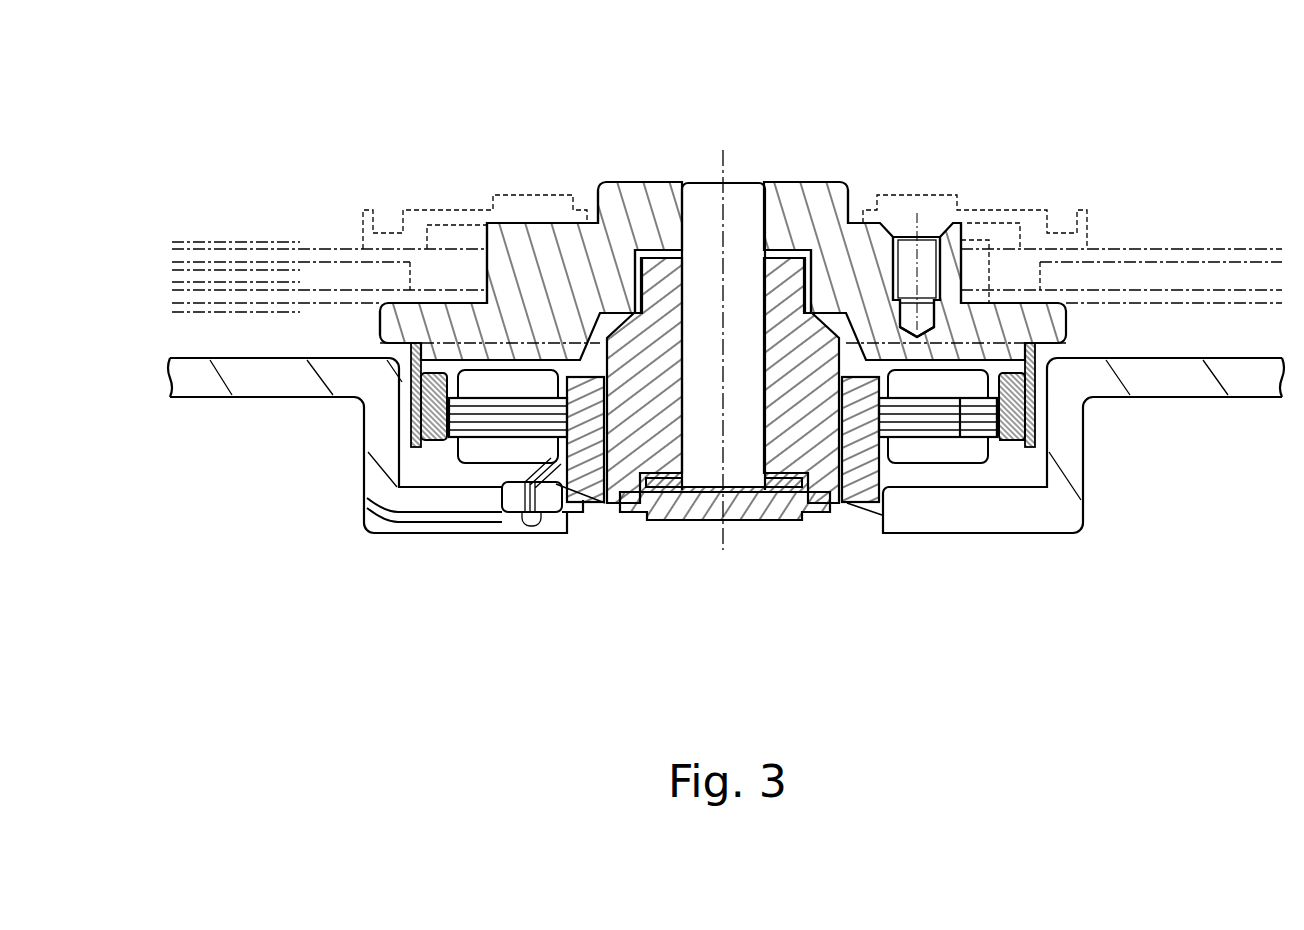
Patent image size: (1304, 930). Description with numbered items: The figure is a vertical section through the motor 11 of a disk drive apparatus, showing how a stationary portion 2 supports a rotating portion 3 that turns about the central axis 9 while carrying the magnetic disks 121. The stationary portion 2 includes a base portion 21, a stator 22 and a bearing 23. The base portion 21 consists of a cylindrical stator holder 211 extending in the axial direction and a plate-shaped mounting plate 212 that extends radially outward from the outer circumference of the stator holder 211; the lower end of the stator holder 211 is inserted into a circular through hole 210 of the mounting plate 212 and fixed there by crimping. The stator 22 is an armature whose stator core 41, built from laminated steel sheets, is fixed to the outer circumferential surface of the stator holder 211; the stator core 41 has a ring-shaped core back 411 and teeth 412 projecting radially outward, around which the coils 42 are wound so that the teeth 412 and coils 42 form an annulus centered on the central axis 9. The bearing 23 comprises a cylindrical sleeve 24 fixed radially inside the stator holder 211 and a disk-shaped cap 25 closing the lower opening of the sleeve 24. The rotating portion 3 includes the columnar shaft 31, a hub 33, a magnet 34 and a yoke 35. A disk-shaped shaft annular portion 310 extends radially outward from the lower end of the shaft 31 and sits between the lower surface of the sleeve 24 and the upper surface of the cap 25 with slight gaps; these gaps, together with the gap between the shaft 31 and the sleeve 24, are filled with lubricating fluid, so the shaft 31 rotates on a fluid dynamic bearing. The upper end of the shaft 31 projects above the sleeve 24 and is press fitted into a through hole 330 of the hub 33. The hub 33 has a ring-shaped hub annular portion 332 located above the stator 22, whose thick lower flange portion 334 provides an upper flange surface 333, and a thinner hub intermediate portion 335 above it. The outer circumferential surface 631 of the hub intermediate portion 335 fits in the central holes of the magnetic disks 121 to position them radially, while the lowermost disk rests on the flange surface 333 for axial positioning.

The stationary portion 2 is at (483, 568).
The rotating portion 3 is at (832, 140).
The central axis 9 is at (721, 158).
The motor 11 is at (1022, 115).
The magnetic disks 121 is at (1186, 248).
The base portion 21 is at (888, 627).
The stator holder 211 is at (845, 495).
The mounting plate 212 is at (905, 470).
The through hole 210 is at (576, 517).
The stator 22 is at (1070, 668).
The bearing 23 is at (710, 627).
The sleeve 24 is at (626, 455).
The cap 25 is at (703, 490).
The shaft 31 is at (682, 183).
The shaft annular portion 310 is at (778, 515).
The hub 33 is at (558, 85).
The through hole 330 is at (745, 240).
The hub annular portion 332 is at (573, 290).
The flange surface 333 is at (447, 303).
The flange portion 334 is at (1025, 335).
The hub intermediate portion 335 is at (842, 240).
The magnet 34 is at (1040, 500).
The yoke 35 is at (414, 445).
The stator core 41 is at (1025, 627).
The core back 411 is at (925, 415).
The teeth 412 is at (980, 430).
The coils 42 is at (1010, 430).
The outer circumferential surface 631 is at (967, 320).